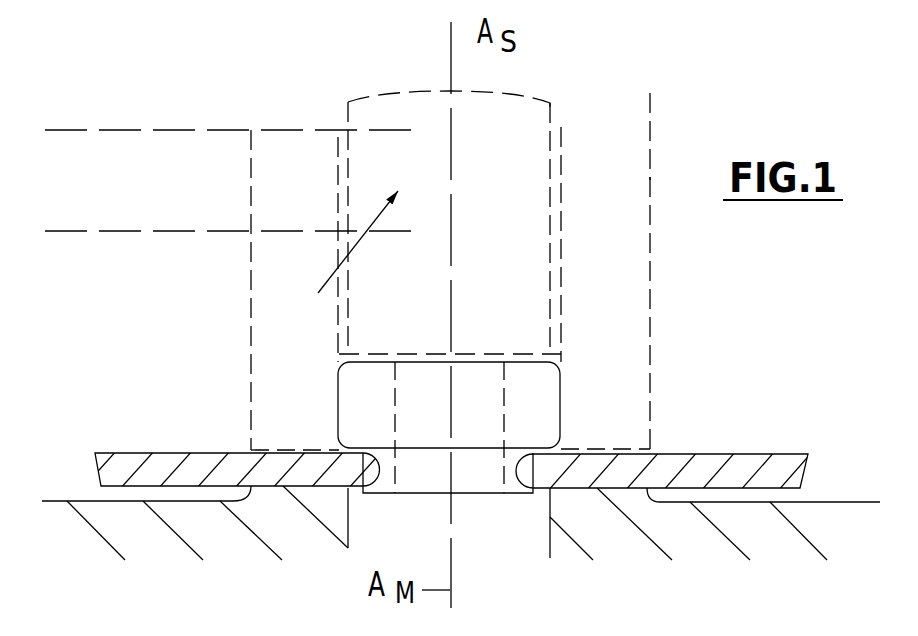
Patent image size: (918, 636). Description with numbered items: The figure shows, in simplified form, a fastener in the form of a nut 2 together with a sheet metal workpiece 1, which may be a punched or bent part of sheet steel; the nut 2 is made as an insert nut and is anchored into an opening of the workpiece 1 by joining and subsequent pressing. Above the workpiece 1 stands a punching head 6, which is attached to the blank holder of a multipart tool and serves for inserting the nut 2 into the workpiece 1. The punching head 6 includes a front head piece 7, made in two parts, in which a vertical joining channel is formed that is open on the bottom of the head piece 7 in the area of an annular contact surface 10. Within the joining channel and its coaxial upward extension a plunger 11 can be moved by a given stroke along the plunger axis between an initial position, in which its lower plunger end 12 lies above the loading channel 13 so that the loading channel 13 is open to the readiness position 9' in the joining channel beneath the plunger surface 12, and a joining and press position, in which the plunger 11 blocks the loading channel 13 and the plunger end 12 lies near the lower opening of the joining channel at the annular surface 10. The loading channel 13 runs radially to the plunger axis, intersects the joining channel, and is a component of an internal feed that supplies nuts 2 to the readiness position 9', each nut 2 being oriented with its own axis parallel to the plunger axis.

The workpiece 1 is at (176, 462).
The nut 2 is at (473, 347).
The punching head 6 is at (657, 128).
The head piece 7 is at (632, 333).
The readiness position 9' is at (486, 225).
The annular surface 10 is at (297, 451).
The plunger 11 is at (537, 186).
The plunger end 12 is at (500, 351).
The loading channel 13 is at (178, 217).